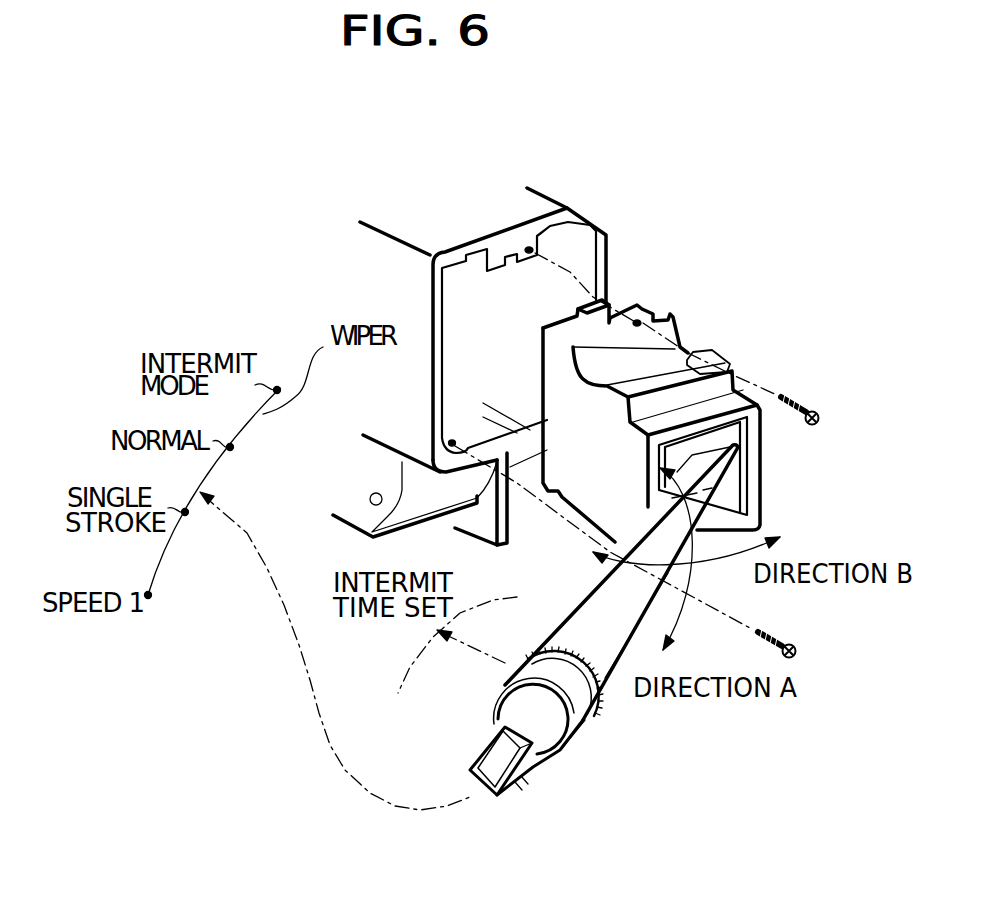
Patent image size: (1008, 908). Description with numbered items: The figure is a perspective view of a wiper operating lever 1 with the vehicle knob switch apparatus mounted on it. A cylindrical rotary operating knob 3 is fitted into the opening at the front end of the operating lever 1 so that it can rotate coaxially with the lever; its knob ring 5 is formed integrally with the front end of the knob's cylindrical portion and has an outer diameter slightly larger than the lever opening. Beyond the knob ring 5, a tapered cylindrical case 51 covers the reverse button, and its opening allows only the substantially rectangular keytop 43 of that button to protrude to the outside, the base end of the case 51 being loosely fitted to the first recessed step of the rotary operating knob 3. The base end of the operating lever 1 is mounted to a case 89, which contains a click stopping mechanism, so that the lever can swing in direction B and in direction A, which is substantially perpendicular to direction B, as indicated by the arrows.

The operating lever 1 is at (590, 593).
The rotary operating knob 3 is at (590, 722).
The knob ring 5 is at (535, 658).
The keytop 43 is at (468, 787).
The case 51 is at (490, 735).
The case 89 is at (735, 376).